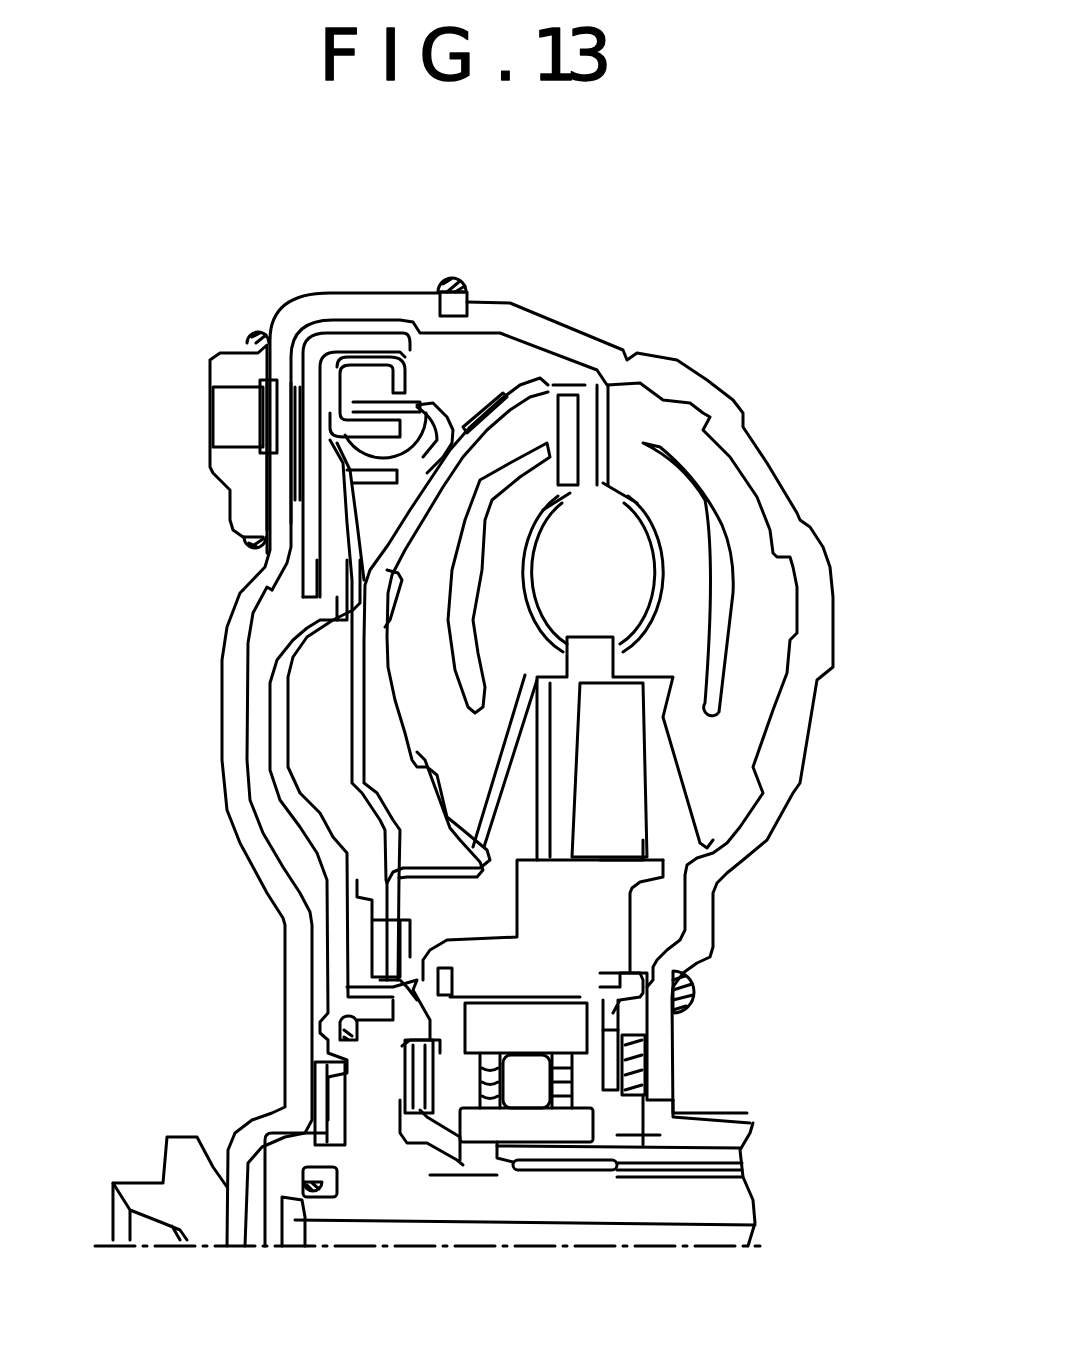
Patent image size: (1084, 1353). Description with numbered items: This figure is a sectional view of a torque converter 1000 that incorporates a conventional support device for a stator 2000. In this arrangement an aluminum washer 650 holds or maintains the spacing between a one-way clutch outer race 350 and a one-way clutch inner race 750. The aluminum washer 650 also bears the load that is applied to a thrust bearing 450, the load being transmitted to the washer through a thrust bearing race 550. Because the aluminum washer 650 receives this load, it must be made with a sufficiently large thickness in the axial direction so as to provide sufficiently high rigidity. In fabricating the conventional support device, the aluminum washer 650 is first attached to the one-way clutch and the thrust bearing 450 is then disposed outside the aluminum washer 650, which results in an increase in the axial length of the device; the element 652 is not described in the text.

The torque converter 1000 is at (520, 270).
The stator 2000 is at (600, 917).
The one-way clutch outer race 350 is at (527, 1017).
The thrust bearing 450 is at (650, 1057).
The thrust bearing race 550 is at (650, 1067).
The aluminum washer 650 is at (673, 1120).
The bearing race 652 is at (650, 1053).
The one-way clutch inner race 750 is at (640, 1140).